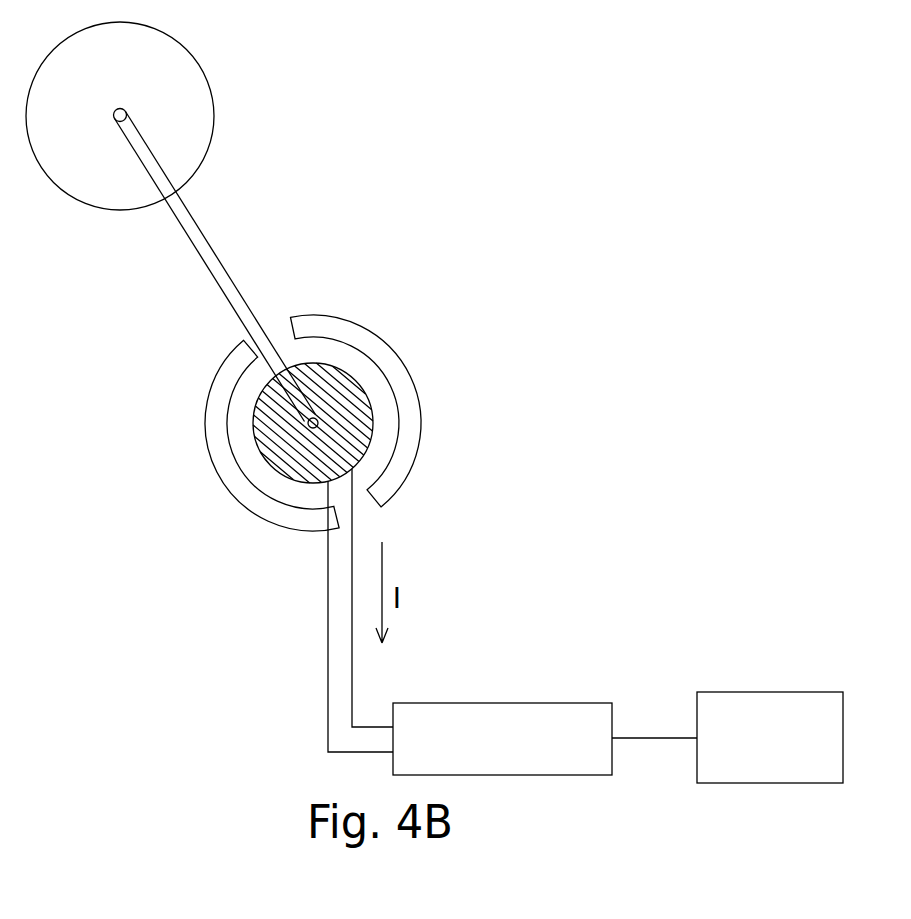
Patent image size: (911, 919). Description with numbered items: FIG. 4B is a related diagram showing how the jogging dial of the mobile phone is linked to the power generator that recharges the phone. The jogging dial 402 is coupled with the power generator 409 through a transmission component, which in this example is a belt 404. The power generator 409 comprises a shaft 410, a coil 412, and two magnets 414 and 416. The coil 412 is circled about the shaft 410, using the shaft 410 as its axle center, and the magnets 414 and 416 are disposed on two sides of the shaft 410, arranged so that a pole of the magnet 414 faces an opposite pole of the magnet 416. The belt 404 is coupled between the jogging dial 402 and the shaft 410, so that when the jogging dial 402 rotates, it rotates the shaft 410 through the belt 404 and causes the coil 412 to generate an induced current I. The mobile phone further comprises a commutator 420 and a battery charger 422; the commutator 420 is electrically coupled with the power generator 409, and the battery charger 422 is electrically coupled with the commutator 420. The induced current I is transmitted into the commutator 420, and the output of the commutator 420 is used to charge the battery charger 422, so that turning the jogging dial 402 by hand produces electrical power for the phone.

The jogging dial 402 is at (212, 88).
The belt 404 is at (213, 252).
The power generator 409 is at (440, 395).
The shaft 410 is at (291, 478).
The coil 412 is at (309, 425).
The magnet 414 is at (208, 395).
The magnet 416 is at (367, 330).
The commutator 420 is at (465, 703).
The battery charger 422 is at (743, 692).